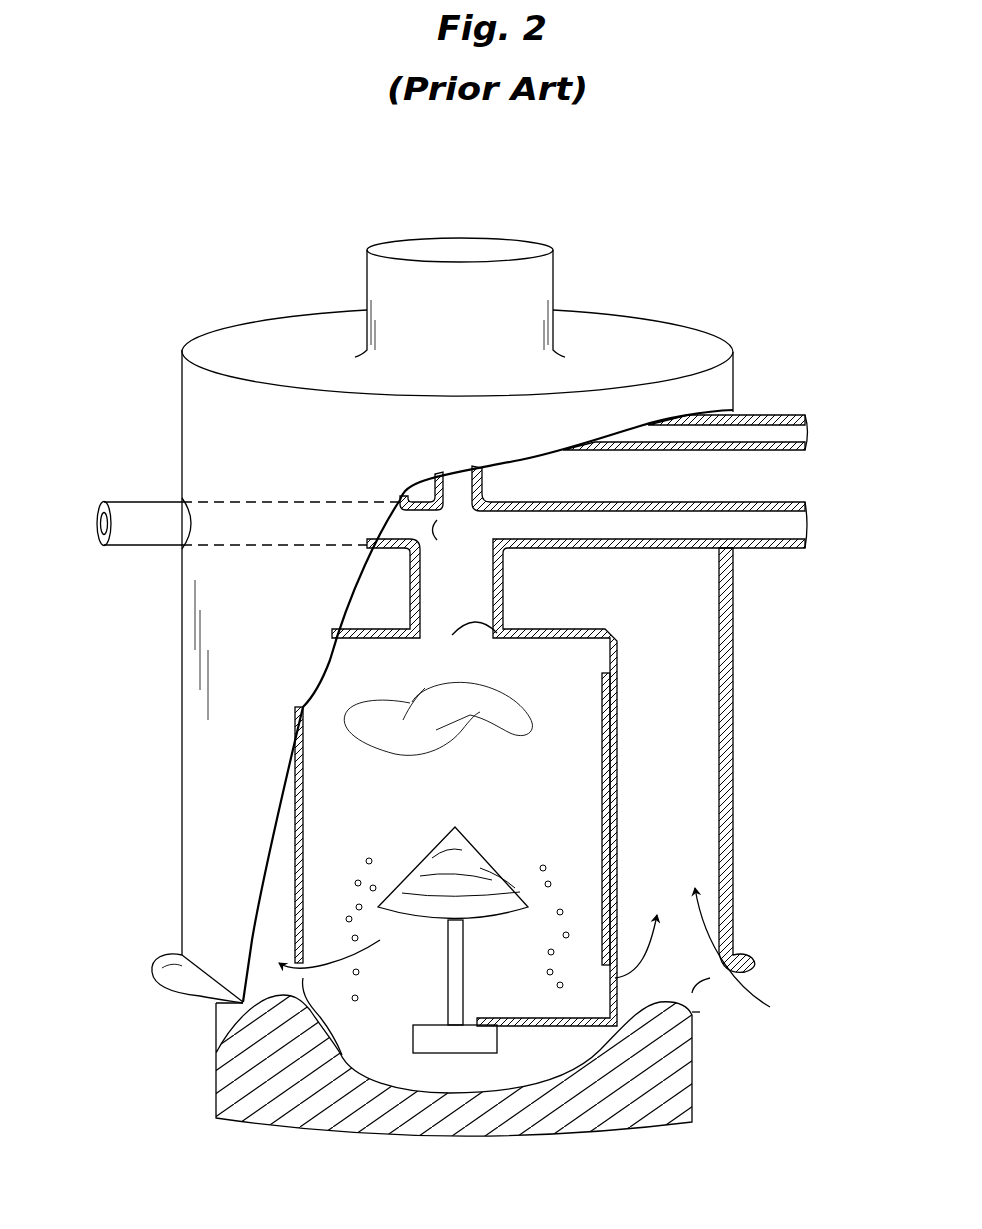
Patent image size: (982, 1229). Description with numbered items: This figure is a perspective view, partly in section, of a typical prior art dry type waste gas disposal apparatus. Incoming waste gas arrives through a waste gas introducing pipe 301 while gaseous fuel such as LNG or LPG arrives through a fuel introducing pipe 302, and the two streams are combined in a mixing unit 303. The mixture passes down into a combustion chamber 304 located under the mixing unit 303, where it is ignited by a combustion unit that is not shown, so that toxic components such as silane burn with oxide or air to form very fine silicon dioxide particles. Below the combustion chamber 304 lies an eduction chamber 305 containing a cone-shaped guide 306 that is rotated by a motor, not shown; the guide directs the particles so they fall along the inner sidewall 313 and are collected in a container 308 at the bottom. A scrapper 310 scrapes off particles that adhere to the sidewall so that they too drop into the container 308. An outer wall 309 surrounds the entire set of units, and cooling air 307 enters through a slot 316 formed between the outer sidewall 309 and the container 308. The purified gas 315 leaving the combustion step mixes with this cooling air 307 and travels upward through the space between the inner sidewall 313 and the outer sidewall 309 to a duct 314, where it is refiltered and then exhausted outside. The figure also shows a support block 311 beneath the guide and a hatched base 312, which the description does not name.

The waste gas introducing pipe 301 is at (777, 420).
The fuel introducing pipe 302 is at (135, 510).
The mixing unit 303 is at (462, 575).
The combustion chamber 304 is at (445, 688).
The eduction chamber 305 is at (372, 832).
The cone-shaped guide 306 is at (480, 863).
The cooling air 307 is at (753, 1007).
The container 308 is at (693, 1012).
The outer wall 309 is at (733, 731).
The scrapper 310 is at (605, 715).
The electrode support block 311 is at (455, 1045).
The base 312 is at (657, 1085).
The inner sidewall 313 is at (617, 690).
The duct 314 is at (372, 282).
The purified gas 315 is at (320, 1007).
The slot 316 is at (197, 1018).